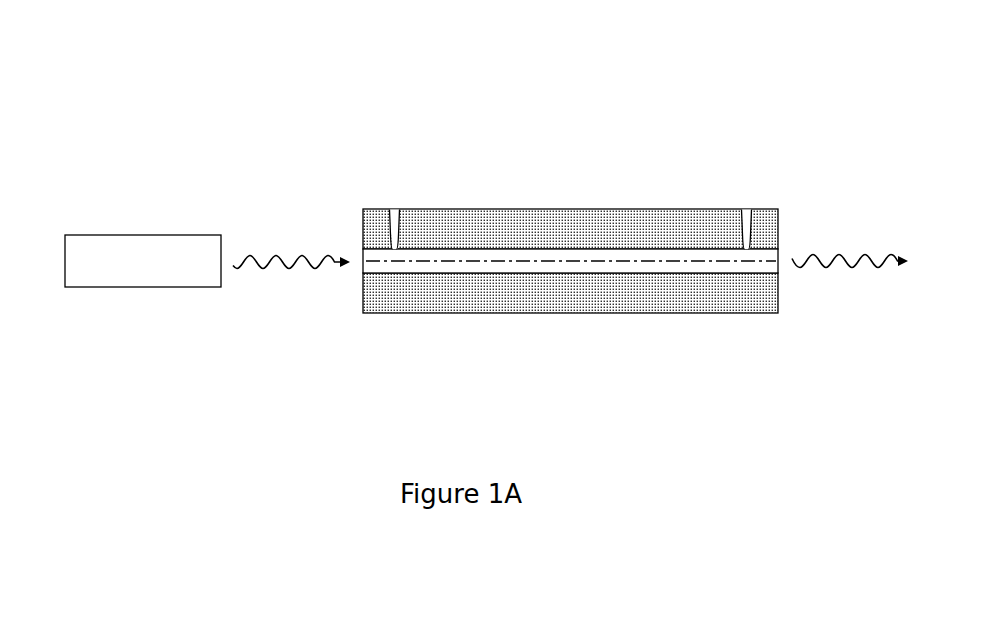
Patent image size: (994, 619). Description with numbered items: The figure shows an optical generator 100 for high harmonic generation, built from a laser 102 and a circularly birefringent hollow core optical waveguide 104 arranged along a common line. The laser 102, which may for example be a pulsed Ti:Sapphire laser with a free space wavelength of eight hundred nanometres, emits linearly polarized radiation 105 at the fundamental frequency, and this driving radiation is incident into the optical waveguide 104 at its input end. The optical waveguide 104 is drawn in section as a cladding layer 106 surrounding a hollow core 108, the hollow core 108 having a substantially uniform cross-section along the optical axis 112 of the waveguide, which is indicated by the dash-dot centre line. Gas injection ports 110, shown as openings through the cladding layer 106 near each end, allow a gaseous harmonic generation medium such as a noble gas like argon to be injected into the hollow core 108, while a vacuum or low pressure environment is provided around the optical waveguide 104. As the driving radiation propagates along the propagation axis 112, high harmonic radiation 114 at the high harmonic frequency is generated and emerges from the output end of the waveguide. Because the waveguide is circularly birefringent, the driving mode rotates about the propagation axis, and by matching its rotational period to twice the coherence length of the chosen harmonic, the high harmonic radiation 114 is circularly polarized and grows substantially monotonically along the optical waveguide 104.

The optical generator 100 is at (162, 100).
The laser 102 is at (143, 261).
The circularly birefringent hollow core optical waveguide 104 is at (564, 250).
The linearly polarized radiation 105 is at (265, 267).
The cladding layer 106 is at (631, 237).
The hollow core 108 is at (556, 268).
The gas injection ports 110 is at (393, 213).
The optical axis 112 is at (673, 262).
The high harmonic radiation 114 is at (820, 265).